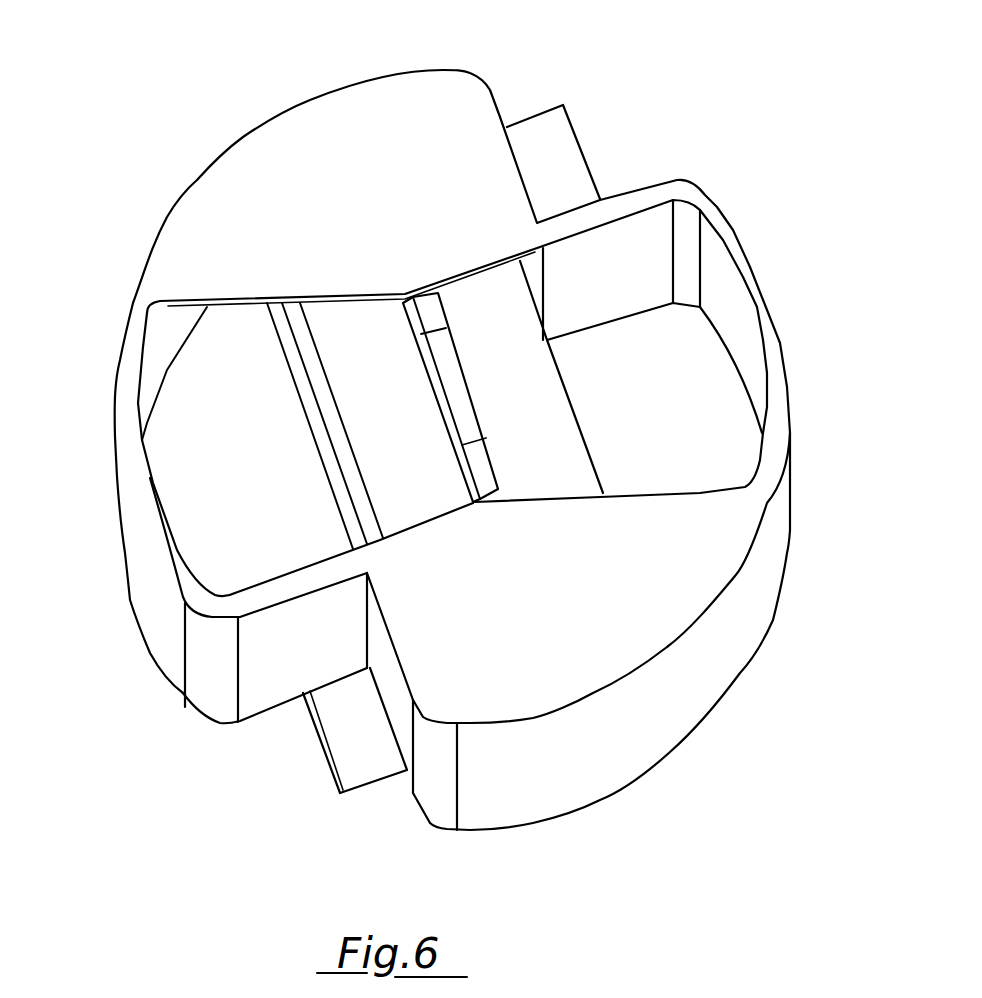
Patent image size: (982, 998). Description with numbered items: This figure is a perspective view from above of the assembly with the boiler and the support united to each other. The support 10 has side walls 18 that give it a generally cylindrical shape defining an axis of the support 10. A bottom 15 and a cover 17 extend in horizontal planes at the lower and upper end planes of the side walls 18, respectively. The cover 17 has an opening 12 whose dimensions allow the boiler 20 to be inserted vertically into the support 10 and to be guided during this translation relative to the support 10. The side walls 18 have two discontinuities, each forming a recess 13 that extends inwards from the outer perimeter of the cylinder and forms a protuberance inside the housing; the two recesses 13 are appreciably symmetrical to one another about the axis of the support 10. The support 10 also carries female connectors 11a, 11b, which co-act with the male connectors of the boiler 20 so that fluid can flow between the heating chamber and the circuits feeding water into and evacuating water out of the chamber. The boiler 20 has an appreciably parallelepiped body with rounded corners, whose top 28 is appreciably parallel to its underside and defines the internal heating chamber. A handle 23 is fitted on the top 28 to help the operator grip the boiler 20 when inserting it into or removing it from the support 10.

The support 10 is at (243, 137).
The female connector 11a is at (537, 143).
The female connector 11b is at (375, 767).
The opening 12 is at (212, 546).
The recess 13 is at (611, 193).
The bottom 15 is at (188, 385).
The cover 17 is at (327, 143).
The side walls 18 is at (622, 748).
The boiler 20 is at (601, 468).
The handle 23 is at (480, 478).
The top 28 is at (552, 412).